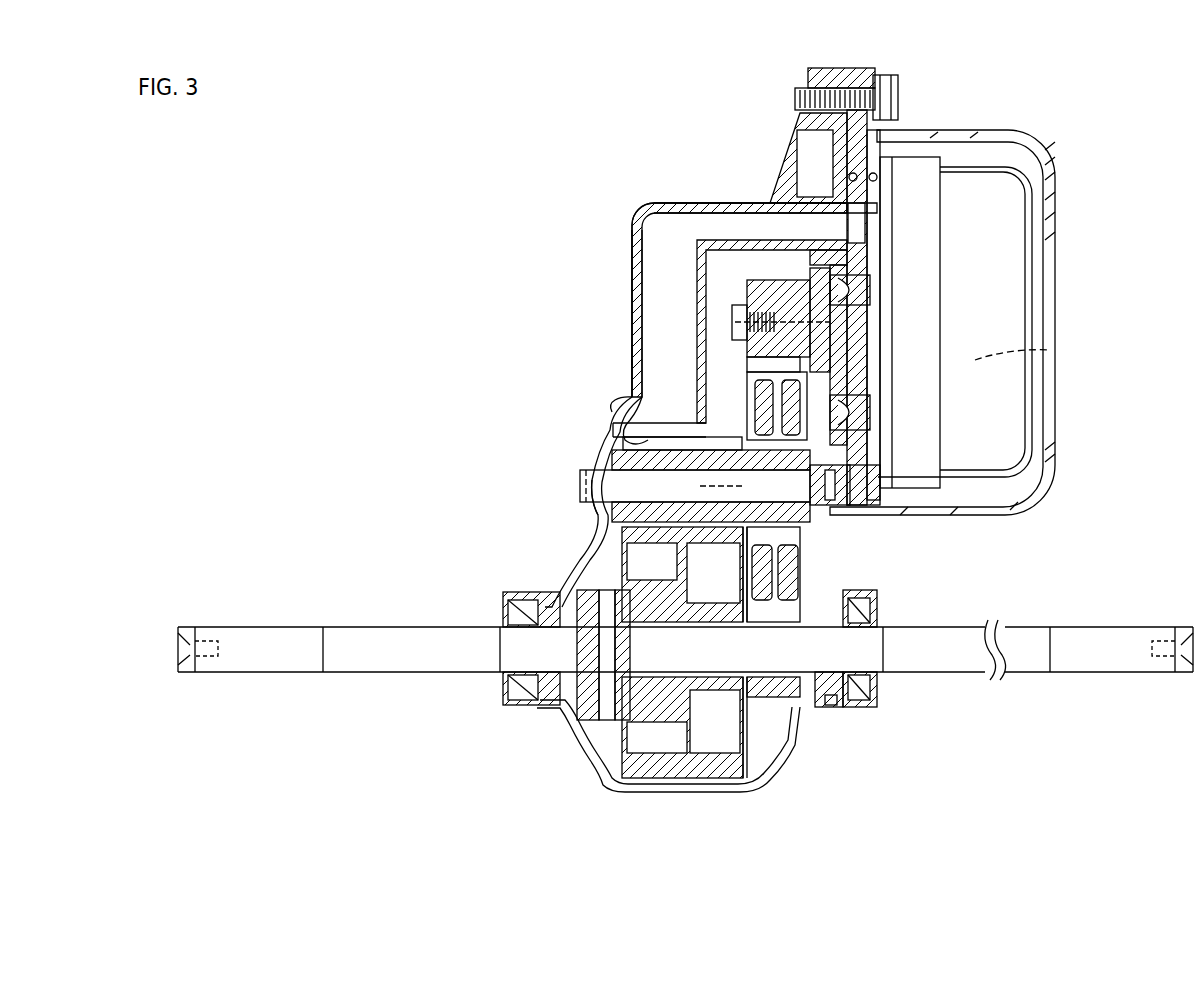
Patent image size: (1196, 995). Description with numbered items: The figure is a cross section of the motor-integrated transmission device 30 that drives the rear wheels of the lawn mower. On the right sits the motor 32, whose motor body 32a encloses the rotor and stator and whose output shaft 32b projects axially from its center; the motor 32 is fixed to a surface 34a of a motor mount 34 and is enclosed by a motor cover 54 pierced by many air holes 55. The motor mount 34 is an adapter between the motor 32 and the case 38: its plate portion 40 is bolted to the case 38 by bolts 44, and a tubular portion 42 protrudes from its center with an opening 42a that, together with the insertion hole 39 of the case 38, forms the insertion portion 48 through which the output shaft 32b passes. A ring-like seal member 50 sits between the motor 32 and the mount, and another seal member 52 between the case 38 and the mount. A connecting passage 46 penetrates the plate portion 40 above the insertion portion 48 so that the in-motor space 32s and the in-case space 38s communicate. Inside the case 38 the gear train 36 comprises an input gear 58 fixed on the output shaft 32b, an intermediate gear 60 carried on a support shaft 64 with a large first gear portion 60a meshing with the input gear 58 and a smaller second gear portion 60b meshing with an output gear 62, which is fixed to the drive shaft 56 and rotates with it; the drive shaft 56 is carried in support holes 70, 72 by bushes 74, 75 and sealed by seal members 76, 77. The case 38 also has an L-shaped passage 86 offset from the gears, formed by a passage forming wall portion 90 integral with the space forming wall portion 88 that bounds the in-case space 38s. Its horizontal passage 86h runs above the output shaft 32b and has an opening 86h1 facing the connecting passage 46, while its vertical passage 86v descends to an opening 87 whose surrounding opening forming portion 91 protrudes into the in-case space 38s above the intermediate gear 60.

The transmission device 30 is at (565, 192).
The motor 32 is at (1036, 254).
The motor body 32a is at (1010, 205).
The output shaft 32b is at (850, 323).
The in-motor space 32s is at (1050, 350).
The motor mount 34 is at (873, 68).
The surface 34a is at (870, 380).
The gear train 36 is at (735, 292).
The case 38 is at (632, 250).
The in-case space 38s is at (605, 570).
The insertion hole 39 is at (850, 288).
The plate portion 40 is at (872, 263).
The tubular portion 42 is at (843, 410).
The opening 42a is at (855, 280).
The bolts 44 is at (895, 95).
The connecting passage 46 is at (878, 226).
The insertion portion 48 is at (927, 302).
The seal member 50 is at (878, 179).
The seal member 52 is at (852, 182).
The motor cover 54 is at (1052, 298).
The air holes 55 is at (1030, 138).
The drive shaft 56 is at (960, 660).
The input gear 58 is at (777, 300).
The intermediate gear 60 is at (803, 538).
The first gear portion 60a is at (757, 604).
The second gear portion 60b is at (632, 462).
The output gear 62 is at (745, 728).
The support shaft 64 is at (600, 481).
The support hole 70 is at (830, 660).
The support hole 72 is at (575, 675).
The bush 74 is at (822, 627).
The bush 75 is at (545, 607).
The seal member 76 is at (862, 680).
The seal member 77 is at (510, 680).
The passage 86 is at (662, 236).
The horizontal passage 86h is at (722, 232).
The opening 86h1 is at (860, 245).
The vertical passage 86v is at (670, 322).
The opening 87 is at (640, 440).
The space forming wall portion 88 is at (612, 540).
The passage forming wall portion 90 is at (640, 353).
The opening forming portion 91 is at (615, 395).